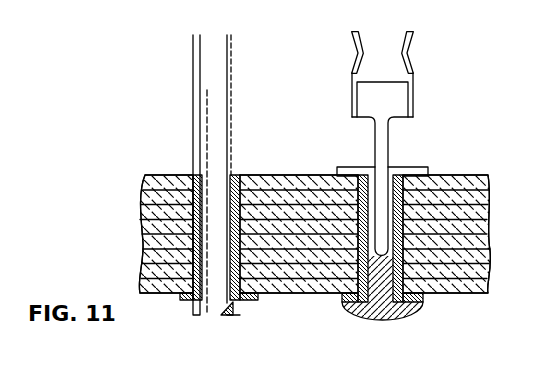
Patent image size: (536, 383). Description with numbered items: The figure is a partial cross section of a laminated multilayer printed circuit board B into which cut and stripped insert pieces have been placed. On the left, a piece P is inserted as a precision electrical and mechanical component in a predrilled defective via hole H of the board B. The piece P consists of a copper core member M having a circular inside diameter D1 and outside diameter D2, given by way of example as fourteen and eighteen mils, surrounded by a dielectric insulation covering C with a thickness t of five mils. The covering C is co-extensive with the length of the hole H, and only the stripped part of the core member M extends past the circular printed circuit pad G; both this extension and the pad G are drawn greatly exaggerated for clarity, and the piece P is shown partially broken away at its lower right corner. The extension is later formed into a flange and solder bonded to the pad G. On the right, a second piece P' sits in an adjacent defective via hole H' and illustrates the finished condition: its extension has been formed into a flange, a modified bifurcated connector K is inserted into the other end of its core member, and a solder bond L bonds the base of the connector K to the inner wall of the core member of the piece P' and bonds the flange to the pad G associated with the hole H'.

The printed circuit board B is at (123, 175).
The dielectric insulation covering C is at (240, 183).
The hole H is at (182, 226).
The piece P is at (191, 215).
The core member M is at (222, 309).
The thickness t is at (178, 45).
The outside diameter D2 is at (202, 65).
The inside diameter D1 is at (209, 105).
The printed circuit pad G is at (343, 299).
The bifurcated connector K is at (384, 142).
The via hole H' is at (414, 225).
The piece P' is at (376, 296).
The solder bond L is at (397, 315).